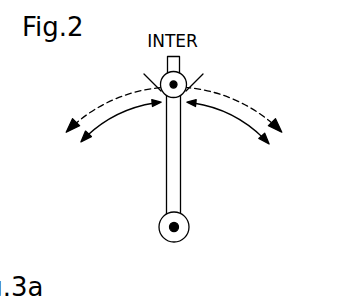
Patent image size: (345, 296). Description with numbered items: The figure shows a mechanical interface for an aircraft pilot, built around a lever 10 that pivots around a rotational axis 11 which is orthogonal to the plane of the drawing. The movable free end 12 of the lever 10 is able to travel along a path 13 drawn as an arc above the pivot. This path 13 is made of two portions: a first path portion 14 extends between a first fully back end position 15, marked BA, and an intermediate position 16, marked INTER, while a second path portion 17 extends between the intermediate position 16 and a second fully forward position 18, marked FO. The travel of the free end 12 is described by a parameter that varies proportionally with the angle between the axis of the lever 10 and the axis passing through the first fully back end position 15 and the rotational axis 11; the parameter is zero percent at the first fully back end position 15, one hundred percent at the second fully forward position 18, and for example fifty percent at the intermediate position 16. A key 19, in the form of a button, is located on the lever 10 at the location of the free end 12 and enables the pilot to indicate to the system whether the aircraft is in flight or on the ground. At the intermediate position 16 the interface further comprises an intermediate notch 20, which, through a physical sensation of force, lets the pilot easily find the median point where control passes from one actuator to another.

The lever 10 is at (181, 175).
The rotational axis 11 is at (176, 231).
The free end 12 is at (163, 77).
The path 13 is at (126, 92).
The first path portion 14 is at (108, 121).
The first fully back end position 15 is at (64, 131).
The intermediate position 16 is at (184, 78).
The second path portion 17 is at (238, 119).
The second fully forward position 18 is at (284, 128).
The key 19 is at (180, 58).
The intermediate notch 20 is at (165, 95).